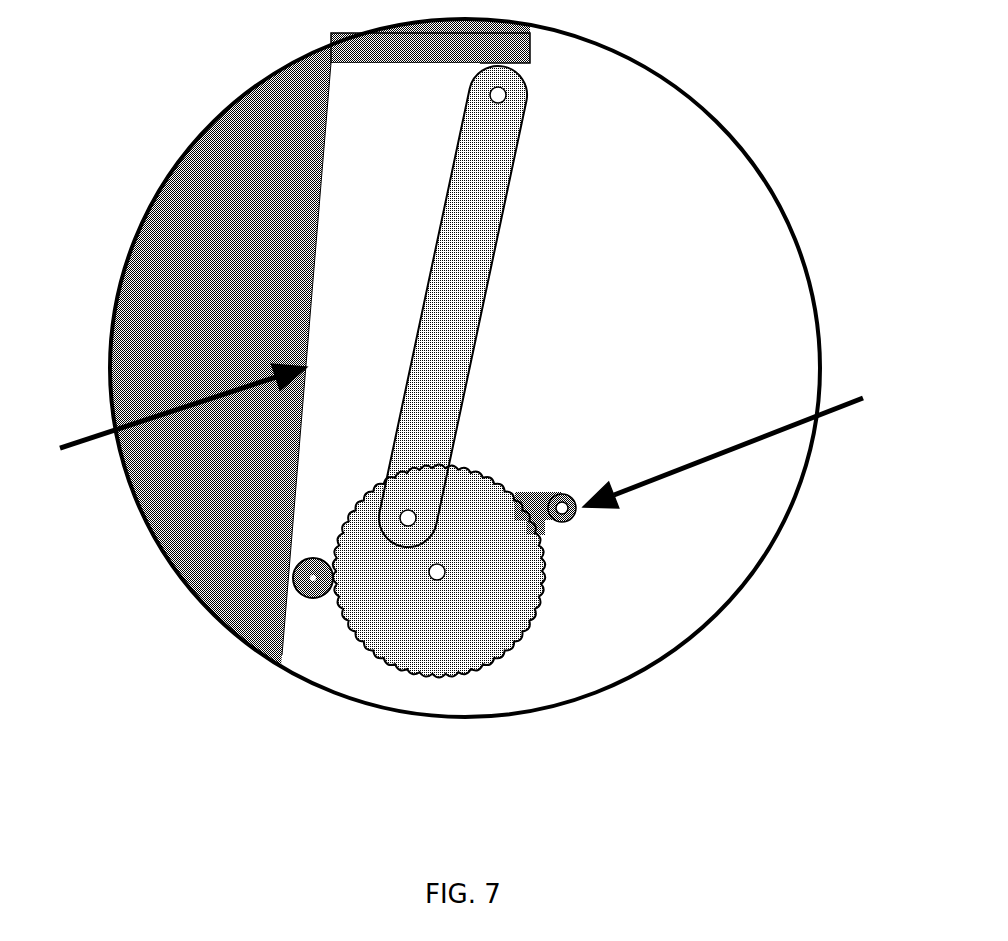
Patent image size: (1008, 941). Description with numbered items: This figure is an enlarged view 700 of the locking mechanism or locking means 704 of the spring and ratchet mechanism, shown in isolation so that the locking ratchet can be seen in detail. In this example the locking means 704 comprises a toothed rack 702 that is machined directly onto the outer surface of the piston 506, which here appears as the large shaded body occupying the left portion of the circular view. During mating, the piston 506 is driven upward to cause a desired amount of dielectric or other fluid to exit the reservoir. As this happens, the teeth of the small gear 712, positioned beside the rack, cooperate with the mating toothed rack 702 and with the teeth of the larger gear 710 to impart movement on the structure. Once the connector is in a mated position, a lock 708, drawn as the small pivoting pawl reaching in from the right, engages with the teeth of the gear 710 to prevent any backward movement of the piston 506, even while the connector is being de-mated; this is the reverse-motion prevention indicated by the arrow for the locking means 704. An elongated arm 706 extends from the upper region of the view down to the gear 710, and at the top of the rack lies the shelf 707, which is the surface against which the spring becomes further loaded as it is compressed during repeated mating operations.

The piston 506 is at (220, 183).
The enlarged view 700 is at (650, 687).
The toothed rack 702 is at (60, 448).
The locking means 704 is at (863, 398).
The lever arm 706 is at (485, 170).
The shelf 707 is at (418, 62).
The lock 708 is at (542, 498).
The gear 710 is at (497, 576).
The gear 712 is at (309, 600).